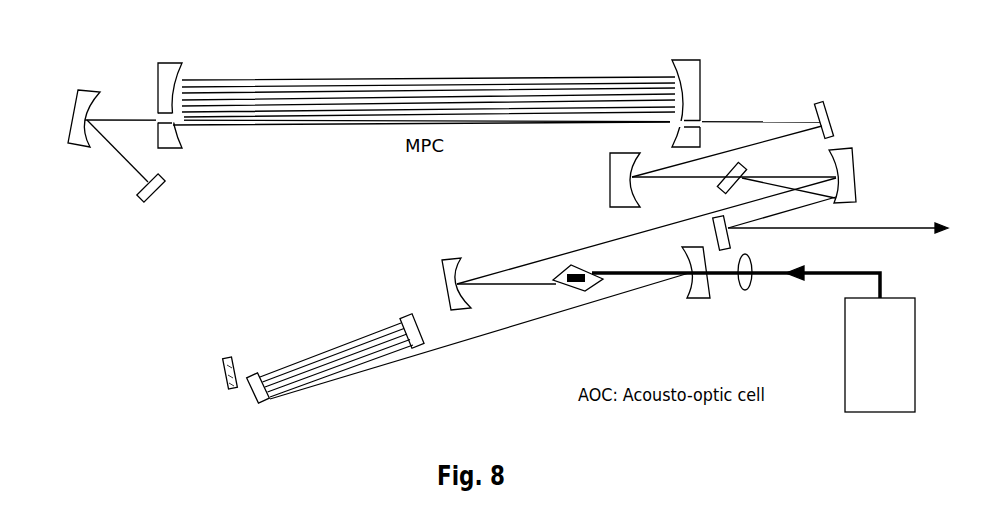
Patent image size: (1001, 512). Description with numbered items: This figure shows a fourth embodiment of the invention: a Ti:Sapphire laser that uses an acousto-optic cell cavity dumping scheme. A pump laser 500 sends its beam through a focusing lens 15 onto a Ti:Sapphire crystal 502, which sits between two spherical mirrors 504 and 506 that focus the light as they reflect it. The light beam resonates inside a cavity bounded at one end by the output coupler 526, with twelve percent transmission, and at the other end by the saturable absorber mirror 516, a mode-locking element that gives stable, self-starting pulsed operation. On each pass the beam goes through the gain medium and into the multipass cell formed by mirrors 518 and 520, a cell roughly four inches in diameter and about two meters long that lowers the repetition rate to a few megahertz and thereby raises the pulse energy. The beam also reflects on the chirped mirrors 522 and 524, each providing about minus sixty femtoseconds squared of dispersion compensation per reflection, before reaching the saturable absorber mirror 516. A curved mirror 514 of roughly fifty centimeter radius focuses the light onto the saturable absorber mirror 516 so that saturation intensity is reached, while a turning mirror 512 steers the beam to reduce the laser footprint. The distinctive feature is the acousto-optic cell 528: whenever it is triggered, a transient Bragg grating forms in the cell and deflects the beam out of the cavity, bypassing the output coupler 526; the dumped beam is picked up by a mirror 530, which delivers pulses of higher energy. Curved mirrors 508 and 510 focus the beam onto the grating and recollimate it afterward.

The pump laser 500 is at (882, 397).
The Ti:Sapphire crystal 502 is at (574, 284).
The spherical mirror 504 is at (443, 270).
The spherical mirror 506 is at (693, 296).
The curved mirror 508 is at (856, 180).
The curved mirror 510 is at (613, 178).
The turning mirror 512 is at (830, 106).
The curved mirror 514 is at (80, 106).
The saturable absorber mirror 516 is at (147, 200).
The multipass cell mirror 518 is at (163, 78).
The multipass cell mirror 520 is at (690, 92).
The chirped mirror 522 is at (255, 395).
The chirped mirror 524 is at (425, 333).
The output coupler 526 is at (225, 372).
The acousto-optic cell 528 is at (788, 160).
The mirror 530 is at (729, 245).
The focusing lens 15 is at (751, 289).